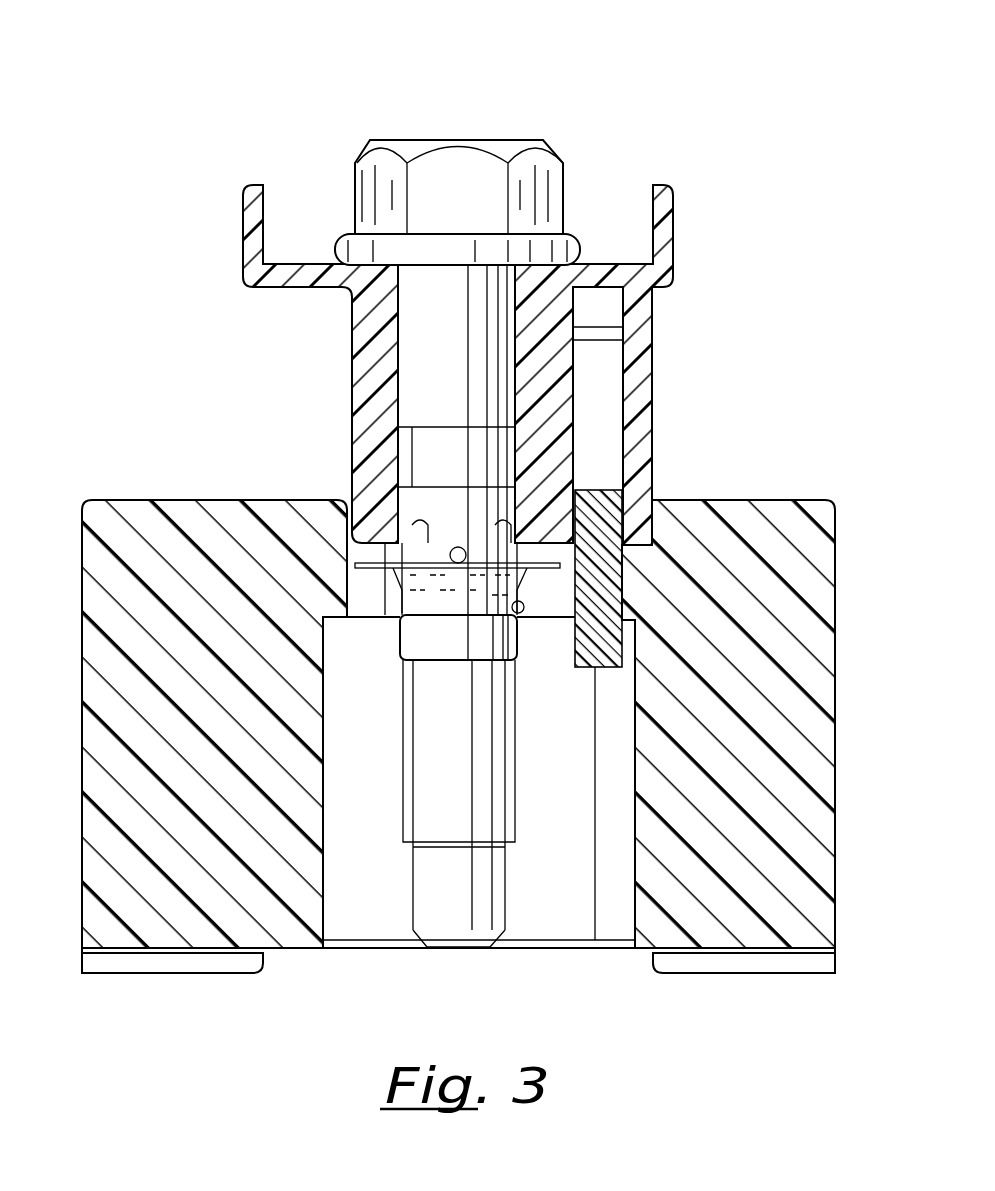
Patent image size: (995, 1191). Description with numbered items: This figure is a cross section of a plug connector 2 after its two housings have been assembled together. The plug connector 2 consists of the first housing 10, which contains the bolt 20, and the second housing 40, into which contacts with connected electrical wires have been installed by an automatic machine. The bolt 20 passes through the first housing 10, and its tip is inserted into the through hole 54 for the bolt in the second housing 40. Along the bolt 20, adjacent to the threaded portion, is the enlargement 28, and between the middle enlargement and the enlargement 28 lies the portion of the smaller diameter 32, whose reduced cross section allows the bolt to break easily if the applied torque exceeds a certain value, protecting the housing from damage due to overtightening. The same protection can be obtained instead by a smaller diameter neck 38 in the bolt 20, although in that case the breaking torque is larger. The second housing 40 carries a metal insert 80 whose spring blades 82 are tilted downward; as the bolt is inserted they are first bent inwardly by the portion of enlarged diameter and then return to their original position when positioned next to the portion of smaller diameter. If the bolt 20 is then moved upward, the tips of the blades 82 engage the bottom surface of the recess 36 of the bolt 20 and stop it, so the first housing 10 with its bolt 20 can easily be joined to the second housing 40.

The plug connector 2 is at (727, 215).
The first housing 10 is at (662, 330).
The bolt 20 is at (501, 128).
The enlargement 28 is at (412, 642).
The portion of the smaller diameter 32 is at (487, 548).
The recess 36 is at (520, 613).
The smaller diameter neck 38 is at (405, 542).
The second housing 40 is at (762, 492).
The through hole 54 is at (402, 555).
The metal insert 80 is at (558, 586).
The spring blades 82 is at (395, 607).